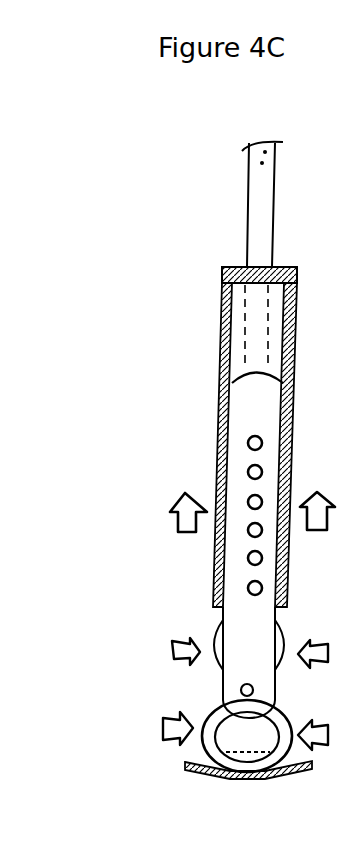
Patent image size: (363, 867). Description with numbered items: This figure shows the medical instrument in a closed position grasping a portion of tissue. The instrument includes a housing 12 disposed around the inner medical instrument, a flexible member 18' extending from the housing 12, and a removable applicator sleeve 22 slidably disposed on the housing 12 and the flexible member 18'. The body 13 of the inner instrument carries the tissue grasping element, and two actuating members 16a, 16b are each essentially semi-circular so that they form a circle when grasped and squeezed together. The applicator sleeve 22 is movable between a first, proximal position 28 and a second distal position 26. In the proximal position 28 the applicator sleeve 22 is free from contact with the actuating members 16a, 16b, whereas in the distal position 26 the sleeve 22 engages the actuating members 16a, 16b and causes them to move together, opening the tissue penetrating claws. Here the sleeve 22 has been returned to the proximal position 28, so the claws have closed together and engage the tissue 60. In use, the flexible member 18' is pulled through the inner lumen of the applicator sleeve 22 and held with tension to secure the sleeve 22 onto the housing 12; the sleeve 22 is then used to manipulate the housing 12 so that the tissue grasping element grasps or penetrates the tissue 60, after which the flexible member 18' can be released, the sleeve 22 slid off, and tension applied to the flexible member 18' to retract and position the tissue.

The flexible member 18' is at (239, 204).
The removable applicator sleeve 22 is at (216, 558).
The first, proximal position 28 is at (152, 320).
The housing 12 is at (223, 683).
The actuating member 16a is at (223, 620).
The actuating member 16b is at (285, 625).
The second distal position 26 is at (93, 635).
The body 13 is at (253, 690).
The tissue 60 is at (195, 766).